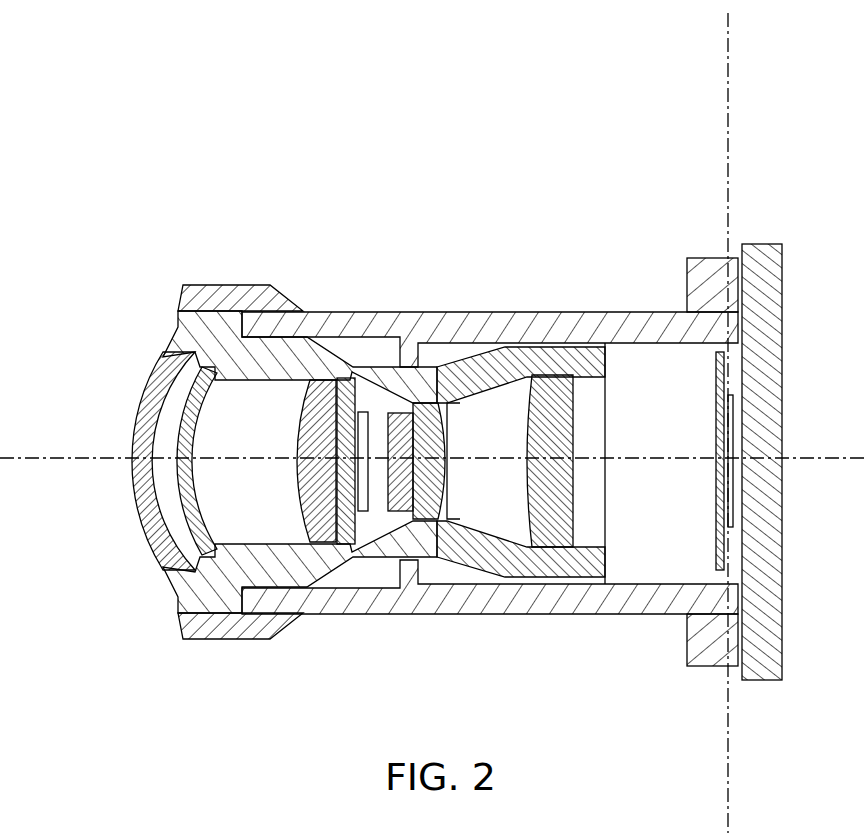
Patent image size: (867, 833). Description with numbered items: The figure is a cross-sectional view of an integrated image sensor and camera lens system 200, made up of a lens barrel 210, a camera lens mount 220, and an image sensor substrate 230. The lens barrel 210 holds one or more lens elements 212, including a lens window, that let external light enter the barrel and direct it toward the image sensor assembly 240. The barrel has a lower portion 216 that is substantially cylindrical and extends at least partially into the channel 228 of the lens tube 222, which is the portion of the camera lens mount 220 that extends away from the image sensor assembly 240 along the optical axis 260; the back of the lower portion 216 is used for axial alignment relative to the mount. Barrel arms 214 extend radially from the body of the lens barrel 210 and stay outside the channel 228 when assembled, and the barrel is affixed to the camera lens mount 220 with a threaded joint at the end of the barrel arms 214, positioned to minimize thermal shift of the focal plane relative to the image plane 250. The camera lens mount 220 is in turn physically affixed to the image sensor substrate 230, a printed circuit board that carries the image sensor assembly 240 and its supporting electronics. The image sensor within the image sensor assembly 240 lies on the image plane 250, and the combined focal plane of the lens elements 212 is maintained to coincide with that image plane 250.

The camera lens system 200 is at (433, 423).
The lens barrel 210 is at (337, 613).
The lens elements 212 is at (172, 355).
The barrel arms 214 is at (230, 640).
The lower portion 216 is at (567, 614).
The camera lens mount 220 is at (556, 336).
The lens tube 222 is at (410, 614).
The channel 228 is at (492, 348).
The image sensor substrate 230 is at (723, 522).
The image sensor assembly 240 is at (757, 640).
The image plane 250 is at (781, 40).
The optical axis 260 is at (48, 451).